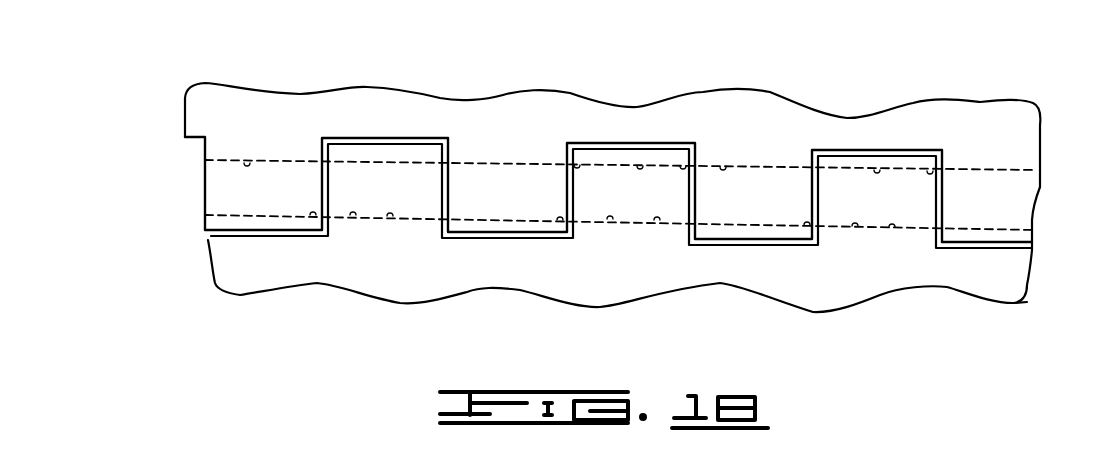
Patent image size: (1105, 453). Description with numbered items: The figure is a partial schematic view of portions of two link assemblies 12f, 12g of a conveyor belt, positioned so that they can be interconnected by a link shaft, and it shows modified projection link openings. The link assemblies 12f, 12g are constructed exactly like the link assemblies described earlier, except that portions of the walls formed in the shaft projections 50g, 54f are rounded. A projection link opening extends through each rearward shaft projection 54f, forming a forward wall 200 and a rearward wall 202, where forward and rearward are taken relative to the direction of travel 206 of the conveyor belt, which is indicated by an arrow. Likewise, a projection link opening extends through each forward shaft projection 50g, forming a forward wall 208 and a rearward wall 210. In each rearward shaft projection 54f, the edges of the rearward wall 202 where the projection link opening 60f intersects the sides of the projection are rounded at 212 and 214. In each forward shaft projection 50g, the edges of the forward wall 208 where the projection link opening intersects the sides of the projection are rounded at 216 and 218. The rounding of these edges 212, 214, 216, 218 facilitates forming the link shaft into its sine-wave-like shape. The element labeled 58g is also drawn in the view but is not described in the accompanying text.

The link assembly 12f is at (198, 149).
The link assembly 12g is at (950, 257).
The forward shaft projection 50g is at (448, 192).
The rearward shaft projection 54f is at (205, 181).
The conductor 58g is at (354, 217).
The projection link opening 60f is at (245, 160).
The forward wall 200 is at (276, 163).
The rearward wall 202 is at (260, 217).
The direction of travel 206 is at (595, 55).
The forward wall 208 is at (380, 157).
The rearward wall 210 is at (390, 217).
The rounded edge 212 is at (205, 215).
The rounded edge 214 is at (313, 218).
The rounded edge 216 is at (333, 127).
The rounded edge 218 is at (443, 164).